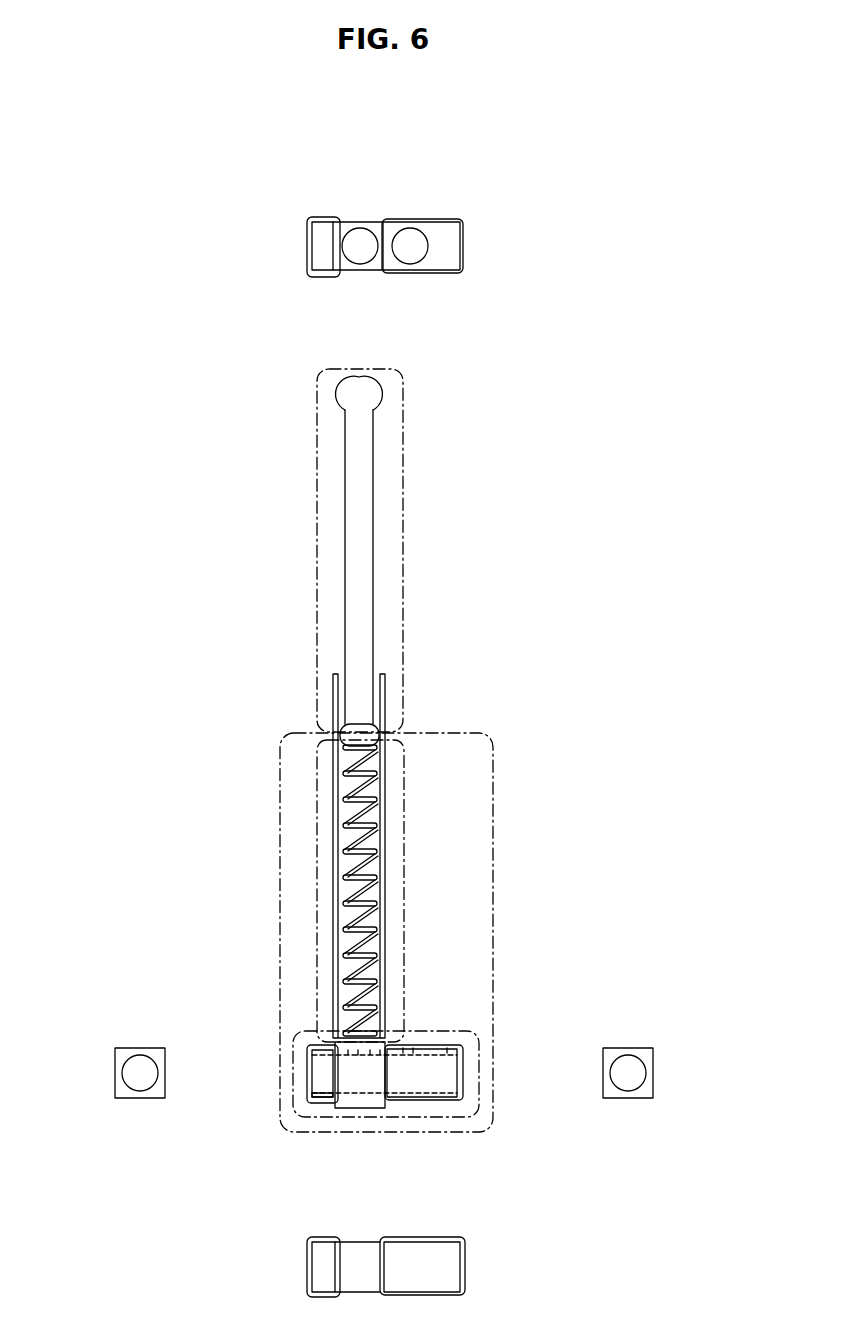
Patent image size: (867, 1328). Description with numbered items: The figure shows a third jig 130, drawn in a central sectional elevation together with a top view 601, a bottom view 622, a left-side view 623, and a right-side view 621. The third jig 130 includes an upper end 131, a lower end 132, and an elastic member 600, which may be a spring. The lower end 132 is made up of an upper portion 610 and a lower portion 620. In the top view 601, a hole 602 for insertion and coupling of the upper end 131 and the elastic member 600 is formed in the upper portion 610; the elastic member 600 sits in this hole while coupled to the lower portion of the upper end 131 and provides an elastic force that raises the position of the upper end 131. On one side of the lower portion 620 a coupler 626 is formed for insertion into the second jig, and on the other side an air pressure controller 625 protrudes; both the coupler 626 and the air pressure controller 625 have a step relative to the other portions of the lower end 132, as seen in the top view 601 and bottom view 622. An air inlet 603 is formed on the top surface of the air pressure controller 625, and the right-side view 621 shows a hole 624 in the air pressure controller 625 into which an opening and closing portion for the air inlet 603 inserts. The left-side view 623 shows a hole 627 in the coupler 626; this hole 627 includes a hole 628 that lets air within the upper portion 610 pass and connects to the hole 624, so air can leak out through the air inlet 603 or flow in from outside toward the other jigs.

The top view 601 is at (355, 119).
The hole 602 is at (350, 218).
The air inlet 603 is at (407, 219).
The coupler 626 is at (298, 238).
The air pressure controller 625 is at (457, 238).
The upper end 131 is at (395, 540).
The third jig 130 is at (380, 690).
The lower end 132 is at (485, 775).
The elastic member 600 is at (337, 812).
The upper portion 610 is at (395, 857).
The hole 628 is at (350, 1040).
The lower portion 620 is at (460, 1023).
The left-side view 623 is at (112, 1019).
The hole 627 is at (315, 1087).
The right-side view 621 is at (600, 1019).
The hole 624 is at (638, 1065).
The bottom view 622 is at (357, 1205).